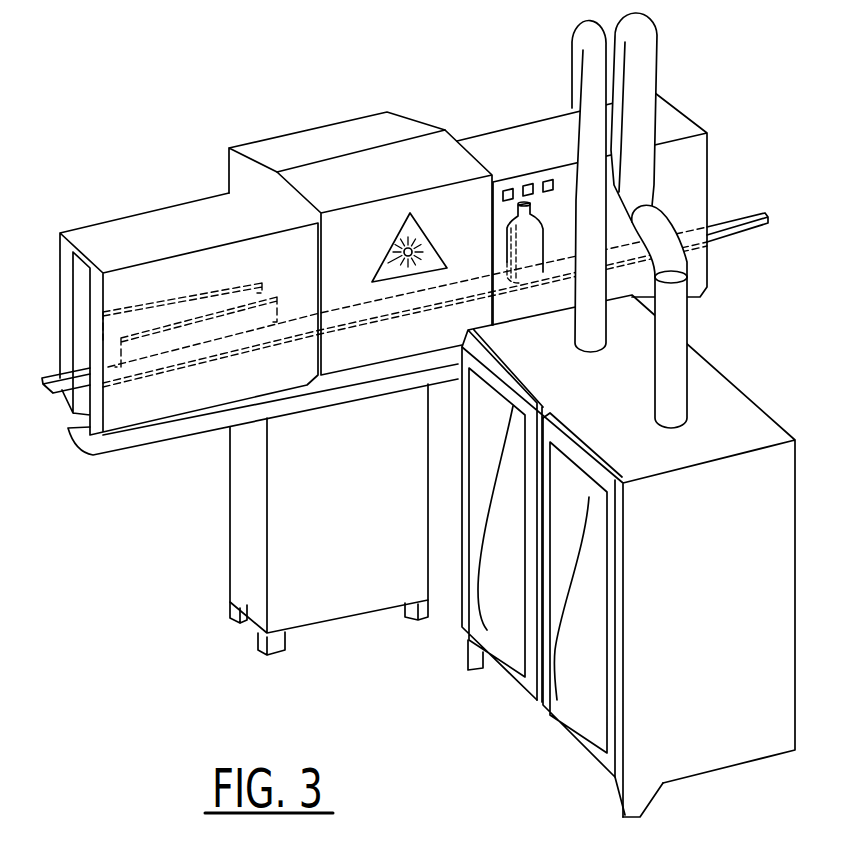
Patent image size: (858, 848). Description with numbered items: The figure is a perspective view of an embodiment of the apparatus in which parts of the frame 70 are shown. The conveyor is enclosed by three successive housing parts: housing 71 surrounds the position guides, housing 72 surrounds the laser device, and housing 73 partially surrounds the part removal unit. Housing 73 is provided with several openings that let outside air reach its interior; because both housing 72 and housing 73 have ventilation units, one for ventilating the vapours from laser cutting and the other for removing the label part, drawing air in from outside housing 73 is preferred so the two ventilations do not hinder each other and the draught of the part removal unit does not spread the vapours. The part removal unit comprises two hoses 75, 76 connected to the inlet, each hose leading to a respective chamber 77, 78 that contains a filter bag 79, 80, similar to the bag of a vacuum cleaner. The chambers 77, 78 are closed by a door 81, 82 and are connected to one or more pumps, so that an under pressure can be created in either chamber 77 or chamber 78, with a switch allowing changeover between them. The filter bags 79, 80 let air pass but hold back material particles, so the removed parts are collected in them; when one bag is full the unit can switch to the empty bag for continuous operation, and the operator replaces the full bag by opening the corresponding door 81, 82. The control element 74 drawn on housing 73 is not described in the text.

The frame 70 is at (245, 658).
The housing 71 is at (140, 230).
The housing 72 is at (435, 144).
The housing 73 is at (485, 141).
The indicator lights 74 is at (528, 186).
The hose 75 is at (600, 72).
The hose 76 is at (623, 135).
The chamber 77 is at (505, 436).
The chamber 78 is at (587, 501).
The filter bag 79 is at (505, 624).
The filter bag 80 is at (587, 695).
The door 81 is at (475, 622).
The door 82 is at (612, 770).